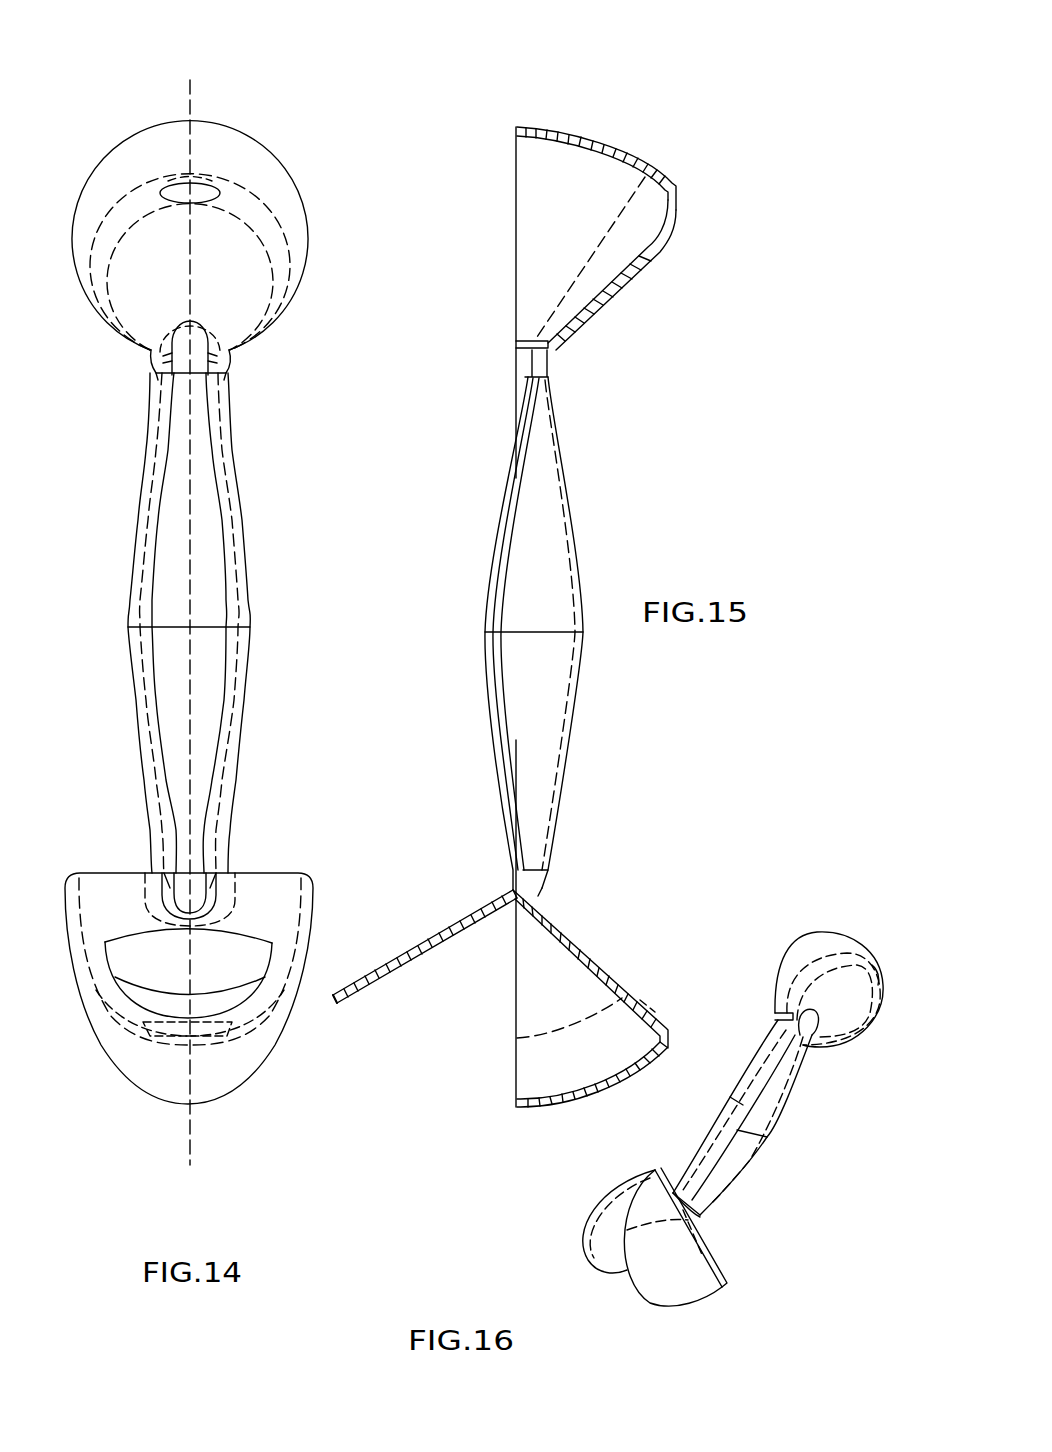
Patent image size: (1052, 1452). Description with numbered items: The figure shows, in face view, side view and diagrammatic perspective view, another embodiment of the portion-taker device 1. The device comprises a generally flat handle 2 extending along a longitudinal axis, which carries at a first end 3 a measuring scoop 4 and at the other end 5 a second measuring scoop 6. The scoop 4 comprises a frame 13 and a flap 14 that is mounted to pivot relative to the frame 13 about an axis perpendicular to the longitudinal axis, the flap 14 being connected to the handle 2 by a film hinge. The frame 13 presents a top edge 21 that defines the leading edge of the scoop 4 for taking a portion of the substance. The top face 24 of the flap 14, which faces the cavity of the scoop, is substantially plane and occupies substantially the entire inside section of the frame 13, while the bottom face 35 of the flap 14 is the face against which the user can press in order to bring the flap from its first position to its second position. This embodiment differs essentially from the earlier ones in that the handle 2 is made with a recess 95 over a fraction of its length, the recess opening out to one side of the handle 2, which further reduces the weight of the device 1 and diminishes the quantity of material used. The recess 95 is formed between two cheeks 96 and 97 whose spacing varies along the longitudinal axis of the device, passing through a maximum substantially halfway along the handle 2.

In FIG. 14, the portion-taker device 1 is at (116, 115).
In FIG. 15, the portion-taker device 1 is at (650, 492).
In FIG. 16, the portion-taker device 1 is at (816, 1166).
In FIG. 14, the handle 2 is at (150, 742).
In FIG. 15, the handle 2 is at (487, 675).
In FIG. 16, the handle 2 is at (757, 1061).
In FIG. 14, the first end 3 is at (150, 872).
In FIG. 15, the first end 3 is at (513, 890).
In FIG. 16, the first end 3 is at (695, 1222).
In FIG. 14, the measuring scoop 4 is at (91, 1078).
In FIG. 15, the measuring scoop 4 is at (620, 920).
In FIG. 16, the measuring scoop 4 is at (553, 1247).
In FIG. 14, the other end 5 is at (232, 370).
In FIG. 15, the other end 5 is at (557, 357).
In FIG. 16, the other end 5 is at (800, 1053).
In FIG. 14, the second measuring scoop 6 is at (308, 175).
In FIG. 15, the second measuring scoop 6 is at (698, 237).
In FIG. 16, the second measuring scoop 6 is at (785, 926).
In FIG. 14, the frame 13 is at (253, 1073).
In FIG. 15, the frame 13 is at (620, 1034).
In FIG. 16, the frame 13 is at (679, 1280).
In FIG. 14, the flap 14 is at (147, 950).
In FIG. 15, the flap 14 is at (438, 937).
In FIG. 16, the flap 14 is at (610, 1213).
In FIG. 15, the top edge 21 is at (517, 1105).
In FIG. 16, the top edge 21 is at (627, 1278).
In FIG. 15, the top face 24 is at (408, 947).
In FIG. 15, the bottom face 35 is at (393, 968).
In FIG. 14, the recess 95 is at (172, 600).
In FIG. 15, the recess 95 is at (552, 683).
In FIG. 16, the recess 95 is at (767, 1137).
In FIG. 14, the cheek 96 is at (153, 503).
In FIG. 14, the cheek 97 is at (232, 523).